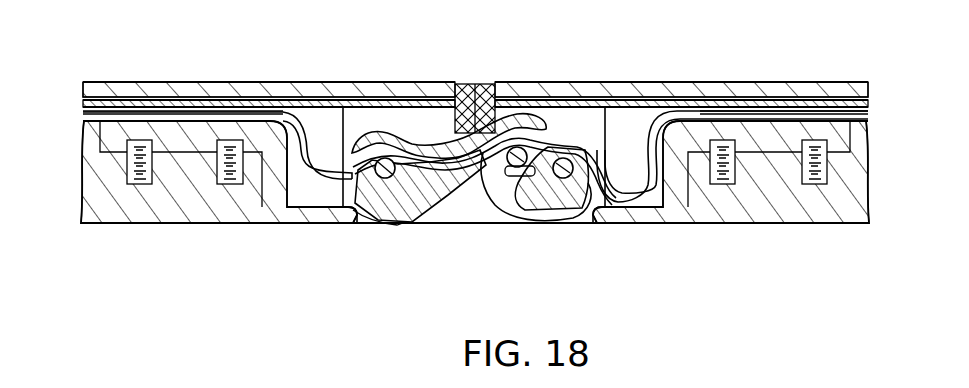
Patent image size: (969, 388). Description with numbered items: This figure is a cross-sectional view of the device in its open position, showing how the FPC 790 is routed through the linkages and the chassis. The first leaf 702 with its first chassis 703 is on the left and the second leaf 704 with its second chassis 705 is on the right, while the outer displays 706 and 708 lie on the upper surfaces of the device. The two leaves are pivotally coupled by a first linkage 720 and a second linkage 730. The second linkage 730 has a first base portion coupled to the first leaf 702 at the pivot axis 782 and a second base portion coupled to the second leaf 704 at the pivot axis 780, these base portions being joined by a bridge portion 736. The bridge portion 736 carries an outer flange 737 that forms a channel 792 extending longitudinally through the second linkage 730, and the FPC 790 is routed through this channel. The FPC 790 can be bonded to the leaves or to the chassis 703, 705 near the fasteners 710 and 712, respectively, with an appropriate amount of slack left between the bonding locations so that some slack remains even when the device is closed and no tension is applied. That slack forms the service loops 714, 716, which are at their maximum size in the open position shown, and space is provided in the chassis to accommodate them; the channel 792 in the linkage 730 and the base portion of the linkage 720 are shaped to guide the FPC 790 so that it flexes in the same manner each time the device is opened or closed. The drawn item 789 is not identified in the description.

The first leaf 702 is at (122, 228).
The second leaf 704 is at (773, 232).
The first chassis 703 is at (323, 125).
The second chassis 705 is at (623, 130).
The outer display 706 is at (375, 87).
The outer display 708 is at (753, 82).
The fastener 710 is at (225, 132).
The fastener 712 is at (713, 132).
The service loop 714 is at (300, 180).
The service loop 716 is at (650, 203).
The first linkage 720 is at (570, 232).
The second linkage 730 is at (398, 220).
The bridge portion 736 is at (450, 185).
The outer flange 737 is at (447, 140).
The pivot axis 780 is at (520, 150).
The pivot axis 782 is at (385, 178).
The pivot lobe 789 is at (543, 207).
The FPC 790 is at (813, 113).
The channel 792 is at (347, 183).